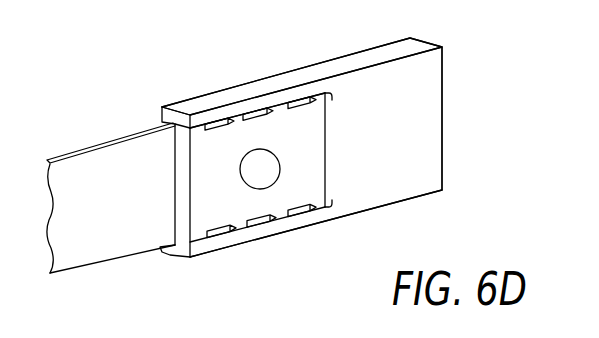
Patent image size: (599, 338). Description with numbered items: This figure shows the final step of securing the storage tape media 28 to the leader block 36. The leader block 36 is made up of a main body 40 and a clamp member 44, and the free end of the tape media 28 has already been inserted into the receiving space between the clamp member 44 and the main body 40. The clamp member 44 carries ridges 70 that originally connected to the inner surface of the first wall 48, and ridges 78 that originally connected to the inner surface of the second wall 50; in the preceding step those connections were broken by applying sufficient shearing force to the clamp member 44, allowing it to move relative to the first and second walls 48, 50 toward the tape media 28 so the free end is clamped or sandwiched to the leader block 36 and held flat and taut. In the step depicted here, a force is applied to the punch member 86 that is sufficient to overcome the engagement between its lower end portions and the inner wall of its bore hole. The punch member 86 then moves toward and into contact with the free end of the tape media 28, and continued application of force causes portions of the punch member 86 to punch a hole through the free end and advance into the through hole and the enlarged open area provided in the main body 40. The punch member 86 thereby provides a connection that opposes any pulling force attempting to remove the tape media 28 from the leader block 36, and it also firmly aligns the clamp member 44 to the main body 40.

The storage tape media 28 is at (121, 240).
The leader block 36 is at (452, 116).
The main body 40 is at (328, 159).
The clamp member 44 is at (201, 227).
The first wall 48 is at (202, 117).
The second wall 50 is at (223, 243).
The ridges 70 is at (240, 119).
The ridges 78 is at (280, 215).
The punch member 86 is at (277, 167).